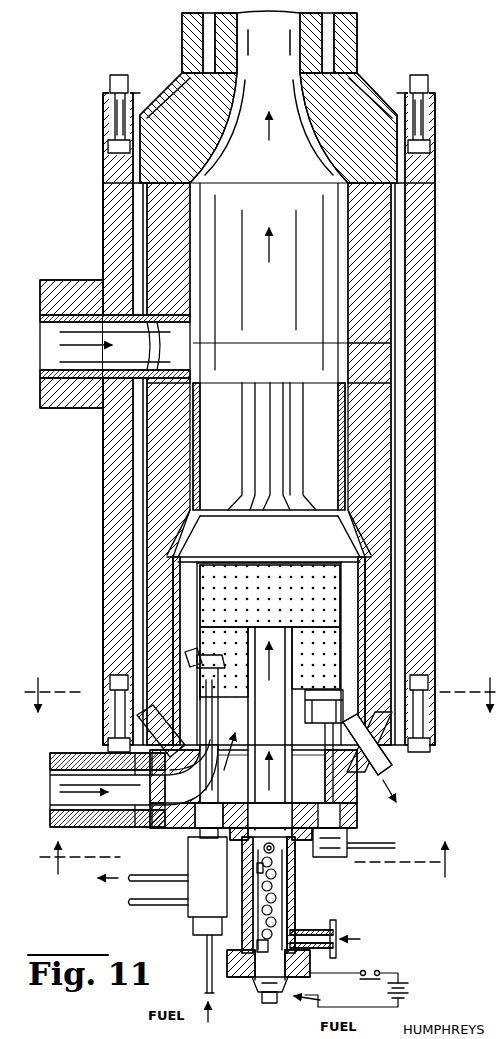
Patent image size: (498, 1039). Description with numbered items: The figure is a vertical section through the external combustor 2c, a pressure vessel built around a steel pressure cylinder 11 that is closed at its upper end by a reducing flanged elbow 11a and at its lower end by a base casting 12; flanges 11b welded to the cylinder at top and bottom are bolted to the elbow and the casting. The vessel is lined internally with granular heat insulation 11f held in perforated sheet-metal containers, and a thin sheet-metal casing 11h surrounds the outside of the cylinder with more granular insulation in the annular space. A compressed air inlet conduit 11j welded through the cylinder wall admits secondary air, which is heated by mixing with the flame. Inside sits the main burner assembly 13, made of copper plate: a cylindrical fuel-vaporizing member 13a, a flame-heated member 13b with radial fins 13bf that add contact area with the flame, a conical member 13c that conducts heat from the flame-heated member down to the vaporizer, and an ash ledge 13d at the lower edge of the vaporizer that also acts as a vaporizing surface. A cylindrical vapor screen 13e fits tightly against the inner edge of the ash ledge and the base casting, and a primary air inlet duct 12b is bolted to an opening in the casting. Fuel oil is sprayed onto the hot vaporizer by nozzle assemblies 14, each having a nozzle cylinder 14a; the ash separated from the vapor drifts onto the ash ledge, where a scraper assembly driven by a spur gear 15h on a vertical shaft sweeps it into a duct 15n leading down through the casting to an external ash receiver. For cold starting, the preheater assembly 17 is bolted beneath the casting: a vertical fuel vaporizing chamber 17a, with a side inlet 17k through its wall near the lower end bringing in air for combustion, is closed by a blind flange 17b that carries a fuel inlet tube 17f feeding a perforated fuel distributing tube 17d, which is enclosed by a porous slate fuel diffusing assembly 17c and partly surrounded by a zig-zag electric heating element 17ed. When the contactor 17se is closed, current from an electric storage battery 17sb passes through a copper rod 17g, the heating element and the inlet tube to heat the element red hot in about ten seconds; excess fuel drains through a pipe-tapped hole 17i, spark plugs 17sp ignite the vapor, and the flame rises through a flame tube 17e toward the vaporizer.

The external combustor 2c is at (436, 412).
The steel pressure cylinder 11 is at (402, 260).
The reducing flanged elbow 11a is at (372, 82).
The flanges 11b is at (438, 136).
The heat insulation 11f is at (353, 230).
The casing 11h is at (436, 304).
The compressed air inlet conduit 11j is at (52, 356).
The base casting 12 is at (416, 772).
The primary air inlet duct 12b is at (55, 790).
The main burner assembly 13 is at (253, 815).
The fuel-vaporizing member 13a is at (172, 595).
The flame-heated member 13b is at (338, 410).
The radial fins 13bf is at (280, 393).
The conical member 13c is at (175, 531).
The ash ledge 13d is at (172, 770).
The vapor screen 13e is at (237, 570).
The nozzle assembly 14 is at (190, 835).
The nozzle cylinder 14a is at (190, 652).
The spur gear 15h is at (326, 728).
The duct 15n is at (382, 774).
The preheater assembly 17 is at (300, 895).
The vertical fuel vaporizing chamber 17a is at (296, 912).
The blind flange 17b is at (240, 980).
The fuel diffusing assembly 17c is at (279, 920).
The fuel distributing tube 17d is at (262, 947).
The flame tube 17e is at (320, 742).
The electric heating element 17ed is at (258, 870).
The fuel inlet tube 17f is at (289, 882).
The copper rod 17g is at (272, 1003).
The pipe-tapped hole 17i is at (256, 985).
The fuel inlet pipe 17k is at (333, 947).
The electric storage battery 17sb is at (402, 985).
The switch 17se is at (378, 970).
The spark plugs 17sp is at (262, 830).